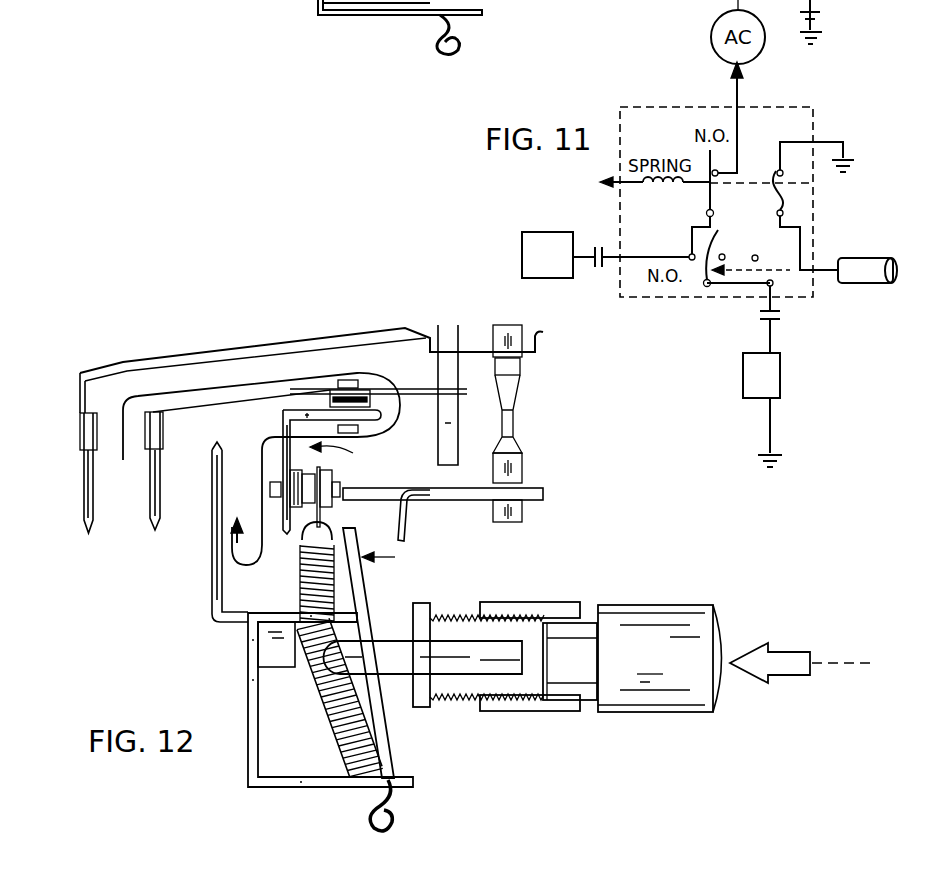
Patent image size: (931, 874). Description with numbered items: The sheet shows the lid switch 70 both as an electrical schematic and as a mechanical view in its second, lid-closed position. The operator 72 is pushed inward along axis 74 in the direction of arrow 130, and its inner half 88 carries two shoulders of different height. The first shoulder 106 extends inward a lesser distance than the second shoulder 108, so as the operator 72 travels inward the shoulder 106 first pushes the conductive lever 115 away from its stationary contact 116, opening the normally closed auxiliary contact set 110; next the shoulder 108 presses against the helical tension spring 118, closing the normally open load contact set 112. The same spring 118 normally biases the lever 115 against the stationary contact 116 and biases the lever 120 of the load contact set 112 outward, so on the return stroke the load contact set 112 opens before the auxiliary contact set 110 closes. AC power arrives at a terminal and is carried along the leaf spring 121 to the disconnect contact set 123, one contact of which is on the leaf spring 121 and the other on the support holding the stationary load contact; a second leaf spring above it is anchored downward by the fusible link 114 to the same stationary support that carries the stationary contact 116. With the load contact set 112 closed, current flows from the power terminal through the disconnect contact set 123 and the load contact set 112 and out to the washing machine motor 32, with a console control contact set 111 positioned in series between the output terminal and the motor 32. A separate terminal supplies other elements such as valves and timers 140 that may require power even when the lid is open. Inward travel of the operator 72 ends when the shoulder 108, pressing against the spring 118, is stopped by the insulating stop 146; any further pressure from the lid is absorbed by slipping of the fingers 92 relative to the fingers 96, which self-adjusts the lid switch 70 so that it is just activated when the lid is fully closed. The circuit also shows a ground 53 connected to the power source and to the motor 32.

In FIG. 11, the washing machine motor 32 is at (743, 387).
In FIG. 11, the ground 53 is at (824, 26).
In FIG. 12, the lid switch 70 is at (237, 334).
In FIG. 11, the operator 72 is at (866, 256).
In FIG. 12, the operator 72 is at (660, 658).
In FIG. 12, the axis 74 is at (840, 667).
In FIG. 11, the inner half 88 is at (538, 0).
In FIG. 12, the fingers 92 is at (527, 602).
In FIG. 12, the fingers 96 is at (497, 685).
In FIG. 11, the first shoulder 106 is at (785, 284).
In FIG. 12, the first shoulder 106 is at (367, 630).
In FIG. 11, the second shoulder 108 is at (734, 243).
In FIG. 12, the second shoulder 108 is at (318, 690).
In FIG. 11, the auxiliary contact set 110 is at (752, 300).
In FIG. 12, the auxiliary contact set 110 is at (423, 532).
In FIG. 11, the console control contact set 111 is at (593, 247).
In FIG. 11, the load contact set 112 is at (693, 284).
In FIG. 12, the load contact set 112 is at (346, 478).
In FIG. 11, the fusible link 114 is at (775, 107).
In FIG. 12, the conductive lever 115 is at (385, 732).
In FIG. 12, the stationary contact 116 is at (415, 508).
In FIG. 12, the helical tension spring 118 is at (393, 757).
In FIG. 11, the lever 120 is at (645, 187).
In FIG. 12, the lever 120 is at (290, 563).
In FIG. 12, the leaf spring 121 is at (255, 398).
In FIG. 11, the disconnect contact set 123 is at (708, 200).
In FIG. 12, the disconnect contact set 123 is at (393, 392).
In FIG. 12, the arrow 130 is at (782, 648).
In FIG. 11, the timers 140 is at (522, 243).
In FIG. 12, the insulating stop 146 is at (272, 647).